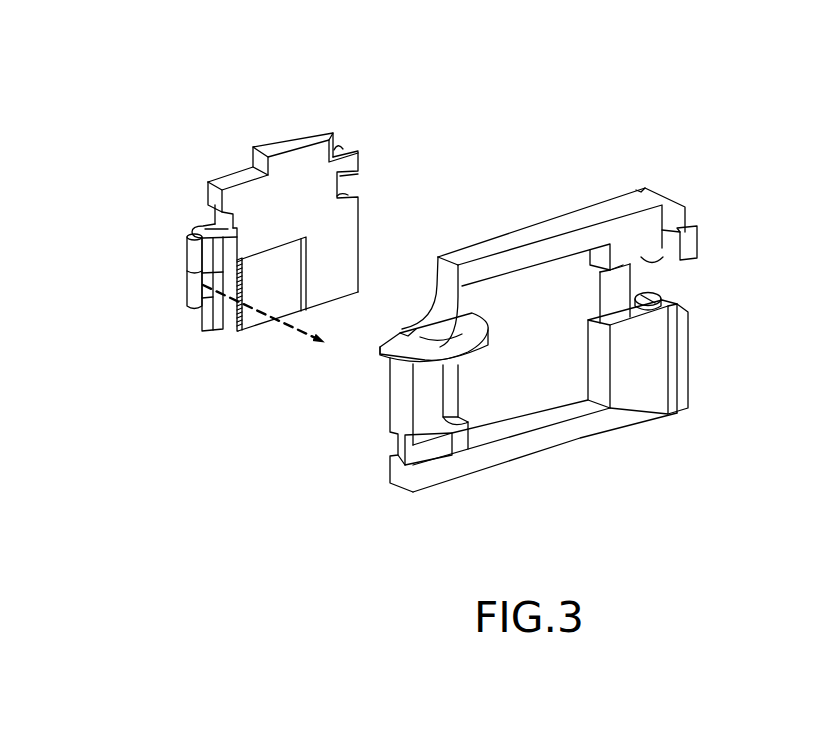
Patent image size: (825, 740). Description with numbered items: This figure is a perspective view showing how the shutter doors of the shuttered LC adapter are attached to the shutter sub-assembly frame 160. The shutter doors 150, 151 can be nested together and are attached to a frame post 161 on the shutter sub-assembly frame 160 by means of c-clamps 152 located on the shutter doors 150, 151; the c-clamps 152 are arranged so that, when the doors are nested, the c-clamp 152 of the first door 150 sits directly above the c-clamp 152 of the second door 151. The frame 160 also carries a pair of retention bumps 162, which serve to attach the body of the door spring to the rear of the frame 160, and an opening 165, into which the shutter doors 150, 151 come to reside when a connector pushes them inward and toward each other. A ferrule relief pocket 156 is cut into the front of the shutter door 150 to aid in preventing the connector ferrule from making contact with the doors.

The shutter door 150 is at (227, 178).
The shutter door 151 is at (352, 133).
The c-clamp 152 is at (190, 253).
The ferrule relief pocket 156 is at (268, 281).
The shutter sub-assembly frame 160 is at (553, 232).
The frame post 161 is at (452, 395).
The retention bump 162 is at (645, 296).
The opening 165 is at (522, 350).